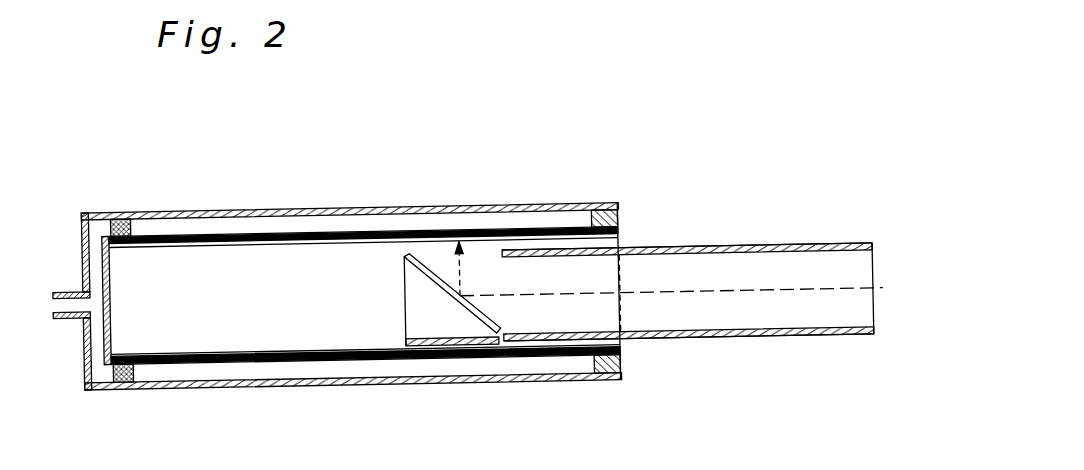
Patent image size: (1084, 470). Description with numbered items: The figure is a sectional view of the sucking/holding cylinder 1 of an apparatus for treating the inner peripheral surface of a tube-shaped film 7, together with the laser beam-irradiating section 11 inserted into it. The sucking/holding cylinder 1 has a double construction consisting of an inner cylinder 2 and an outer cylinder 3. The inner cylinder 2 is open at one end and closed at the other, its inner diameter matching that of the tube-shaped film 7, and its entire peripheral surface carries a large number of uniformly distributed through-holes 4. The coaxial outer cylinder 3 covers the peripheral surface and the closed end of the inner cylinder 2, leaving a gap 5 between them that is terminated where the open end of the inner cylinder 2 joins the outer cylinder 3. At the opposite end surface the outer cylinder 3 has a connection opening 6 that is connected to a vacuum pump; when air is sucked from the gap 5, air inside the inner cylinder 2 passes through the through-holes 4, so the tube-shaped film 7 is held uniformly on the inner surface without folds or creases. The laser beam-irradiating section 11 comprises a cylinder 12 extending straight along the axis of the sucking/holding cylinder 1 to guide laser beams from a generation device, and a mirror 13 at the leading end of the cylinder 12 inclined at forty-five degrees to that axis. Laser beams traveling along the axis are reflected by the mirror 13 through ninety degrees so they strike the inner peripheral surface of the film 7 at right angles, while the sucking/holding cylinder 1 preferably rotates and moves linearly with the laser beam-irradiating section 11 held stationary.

The sucking/holding cylinder 1 is at (455, 196).
The inner cylinder 2 is at (360, 252).
The outer cylinder 3 is at (247, 213).
The through-holes 4 is at (203, 241).
The gap 5 is at (153, 218).
The connection opening 6 is at (72, 292).
The tube-shaped film 7 is at (140, 250).
The laser beam-irradiating section 11 is at (713, 233).
The cylinder 12 is at (803, 243).
The mirror 13 is at (444, 294).